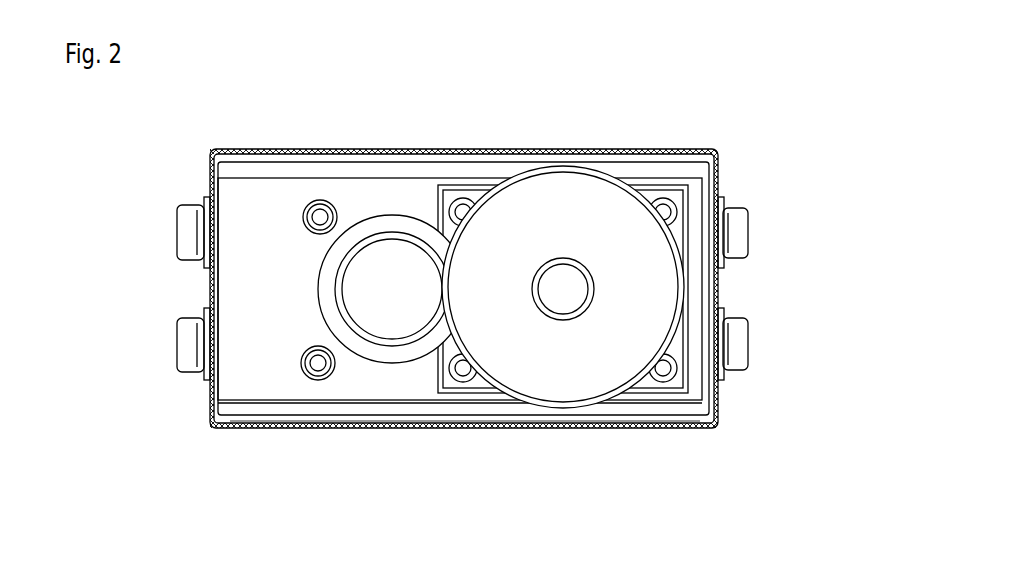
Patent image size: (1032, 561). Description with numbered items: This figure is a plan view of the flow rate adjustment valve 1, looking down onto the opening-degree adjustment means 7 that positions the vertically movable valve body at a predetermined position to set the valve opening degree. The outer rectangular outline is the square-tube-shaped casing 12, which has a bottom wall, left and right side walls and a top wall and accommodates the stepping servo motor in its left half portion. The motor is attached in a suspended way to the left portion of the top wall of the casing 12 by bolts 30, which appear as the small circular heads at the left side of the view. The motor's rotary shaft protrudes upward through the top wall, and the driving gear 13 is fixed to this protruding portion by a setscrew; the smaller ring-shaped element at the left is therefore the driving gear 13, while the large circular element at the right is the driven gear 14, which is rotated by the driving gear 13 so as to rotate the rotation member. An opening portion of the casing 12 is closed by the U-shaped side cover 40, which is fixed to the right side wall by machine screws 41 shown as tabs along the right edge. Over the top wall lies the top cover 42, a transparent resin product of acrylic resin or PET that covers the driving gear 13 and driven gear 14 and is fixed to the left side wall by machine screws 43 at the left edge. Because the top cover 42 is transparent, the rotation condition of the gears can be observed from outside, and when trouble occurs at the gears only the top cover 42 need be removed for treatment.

The flow rate adjustment valve 1 is at (778, 275).
The opening-degree adjustment means 7 is at (652, 193).
The casing 12 is at (695, 388).
The driving gear 13 is at (379, 313).
The driven gear 14 is at (593, 368).
The bolts 30 is at (318, 380).
The side cover 40 is at (505, 415).
The machine screws 41 is at (748, 350).
The top cover 42 is at (208, 296).
The machine screws 43 is at (187, 348).